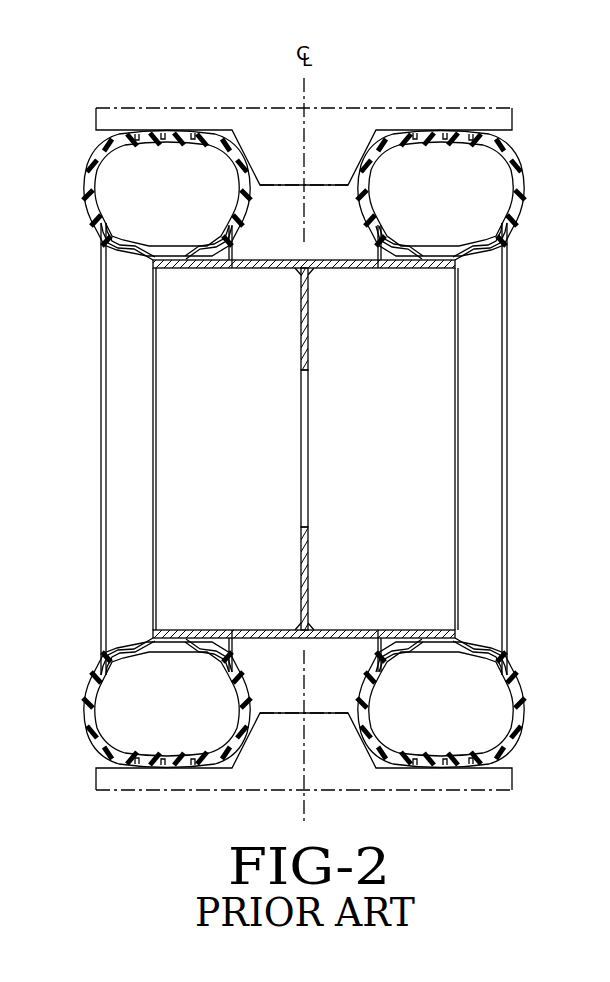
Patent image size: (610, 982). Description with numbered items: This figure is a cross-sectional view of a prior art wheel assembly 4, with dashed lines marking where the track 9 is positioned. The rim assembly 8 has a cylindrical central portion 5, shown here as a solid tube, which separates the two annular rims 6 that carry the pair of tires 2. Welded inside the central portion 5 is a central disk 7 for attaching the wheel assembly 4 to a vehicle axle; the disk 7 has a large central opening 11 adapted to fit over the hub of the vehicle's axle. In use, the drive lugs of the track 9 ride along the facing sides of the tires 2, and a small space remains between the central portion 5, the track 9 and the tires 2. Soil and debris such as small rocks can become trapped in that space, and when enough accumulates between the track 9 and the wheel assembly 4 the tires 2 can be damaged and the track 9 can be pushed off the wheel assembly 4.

The tire 2 is at (93, 160).
The wheel assembly 4 is at (543, 276).
The cylindrical central portion 5 is at (212, 632).
The annular rim 6 is at (142, 648).
The central disk 7 is at (310, 565).
The rim assembly 8 is at (464, 413).
The track 9 is at (415, 108).
The central opening 11 is at (306, 468).